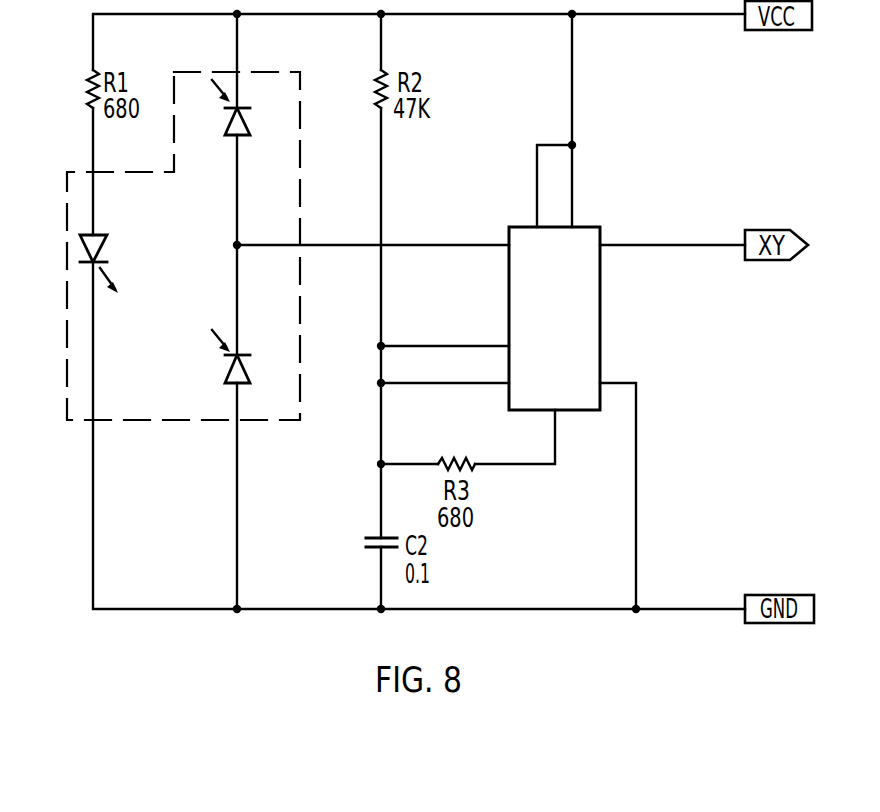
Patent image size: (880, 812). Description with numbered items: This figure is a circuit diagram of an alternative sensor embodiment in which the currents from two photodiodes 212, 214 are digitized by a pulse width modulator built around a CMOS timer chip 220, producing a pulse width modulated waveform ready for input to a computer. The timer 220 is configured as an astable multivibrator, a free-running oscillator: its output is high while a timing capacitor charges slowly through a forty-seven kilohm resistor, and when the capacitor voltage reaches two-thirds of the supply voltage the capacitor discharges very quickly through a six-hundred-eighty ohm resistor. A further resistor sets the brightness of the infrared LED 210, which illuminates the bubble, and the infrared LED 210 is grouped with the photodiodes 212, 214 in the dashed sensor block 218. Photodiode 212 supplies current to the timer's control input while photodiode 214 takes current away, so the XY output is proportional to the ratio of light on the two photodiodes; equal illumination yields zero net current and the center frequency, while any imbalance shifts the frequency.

The infrared LED 210 is at (107, 250).
The photodiode 212 is at (232, 137).
The photodiode 214 is at (228, 375).
The optical sensor assembly (dashed enclosure) 218 is at (190, 420).
The CMOS 555 timer chip 220 is at (572, 326).